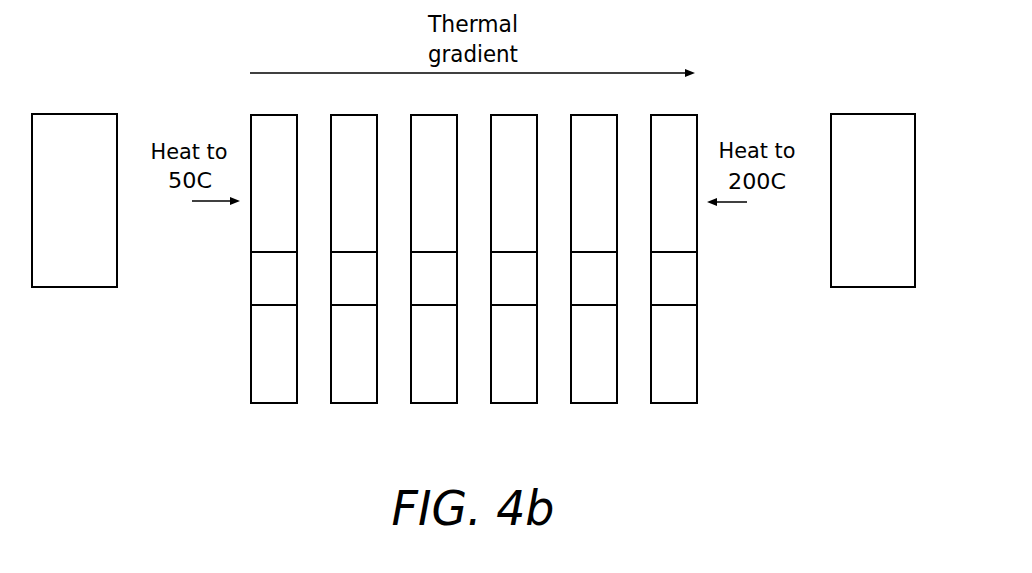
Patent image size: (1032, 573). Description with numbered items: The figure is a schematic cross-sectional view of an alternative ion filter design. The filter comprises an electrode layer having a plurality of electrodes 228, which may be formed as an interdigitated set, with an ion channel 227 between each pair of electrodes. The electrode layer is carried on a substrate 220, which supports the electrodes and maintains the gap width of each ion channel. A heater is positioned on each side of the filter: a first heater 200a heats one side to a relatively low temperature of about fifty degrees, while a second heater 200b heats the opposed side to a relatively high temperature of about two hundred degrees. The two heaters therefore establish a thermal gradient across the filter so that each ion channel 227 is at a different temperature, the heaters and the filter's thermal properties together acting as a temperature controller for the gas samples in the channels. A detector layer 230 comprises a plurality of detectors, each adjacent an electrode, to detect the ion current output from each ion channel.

The first heater 200a is at (46, 211).
The second heater 200b is at (845, 211).
The substrate 220 is at (605, 221).
The ion channel 227 is at (473, 289).
The electrodes 228 is at (283, 289).
The detector layer 230 is at (718, 372).